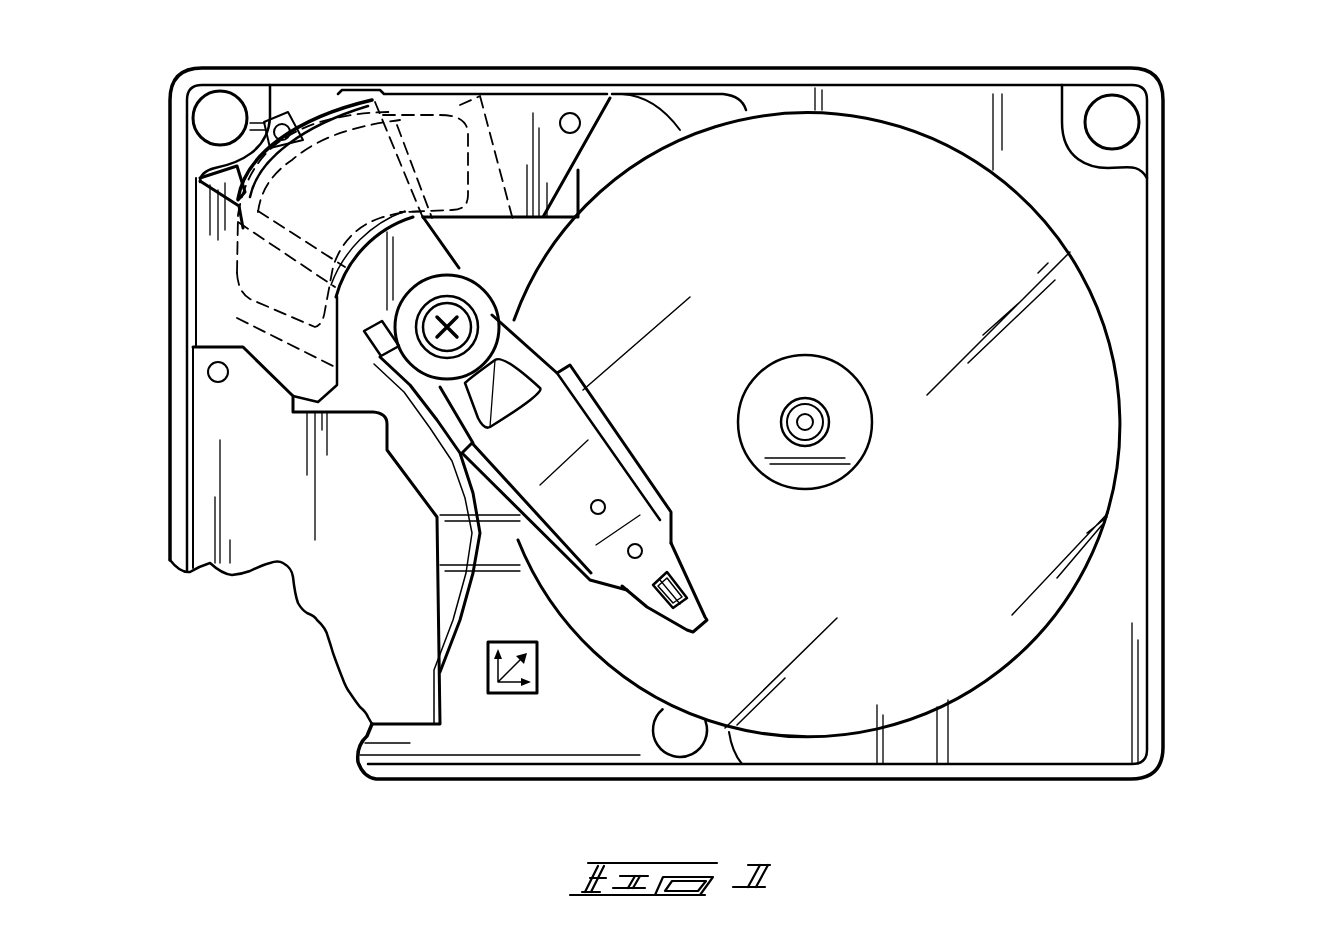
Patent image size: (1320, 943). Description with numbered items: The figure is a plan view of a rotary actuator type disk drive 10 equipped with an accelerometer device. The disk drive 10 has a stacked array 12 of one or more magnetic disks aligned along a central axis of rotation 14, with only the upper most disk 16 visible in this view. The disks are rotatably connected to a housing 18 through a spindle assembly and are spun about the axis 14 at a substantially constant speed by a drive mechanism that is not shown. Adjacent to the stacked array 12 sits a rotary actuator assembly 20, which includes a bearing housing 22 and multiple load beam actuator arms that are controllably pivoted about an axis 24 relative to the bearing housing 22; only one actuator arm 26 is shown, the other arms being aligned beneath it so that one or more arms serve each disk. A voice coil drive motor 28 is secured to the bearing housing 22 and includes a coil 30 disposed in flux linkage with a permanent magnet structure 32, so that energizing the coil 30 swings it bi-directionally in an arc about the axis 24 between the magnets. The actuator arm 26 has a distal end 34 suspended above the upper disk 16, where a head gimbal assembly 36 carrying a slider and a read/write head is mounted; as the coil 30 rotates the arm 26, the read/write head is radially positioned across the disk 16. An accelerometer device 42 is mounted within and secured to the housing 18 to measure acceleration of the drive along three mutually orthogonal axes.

The disk drive 10 is at (1203, 153).
The stacked array 12 is at (1118, 335).
The central axis of rotation 14 is at (799, 418).
The upper most disk 16 is at (1100, 412).
The housing 18 is at (1164, 560).
The rotary actuator assembly 20 is at (461, 263).
The bearing housing 22 is at (480, 306).
The axis 24 is at (450, 327).
The actuator arm 26 is at (557, 428).
The voice coil drive motor 28 is at (342, 213).
The coil 30 is at (343, 297).
The permanent magnet structure 32 is at (463, 102).
The distal end 34 is at (682, 562).
The head gimbal assembly 36 is at (665, 597).
The accelerometer device 42 is at (515, 703).